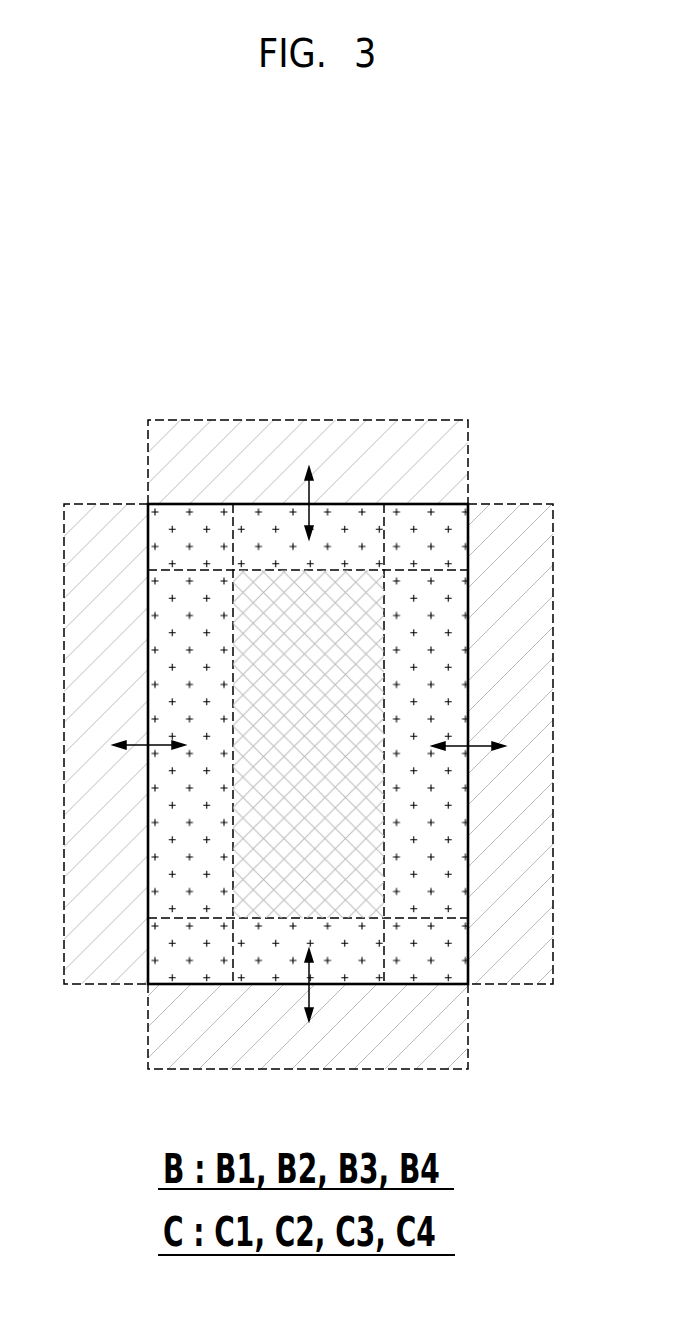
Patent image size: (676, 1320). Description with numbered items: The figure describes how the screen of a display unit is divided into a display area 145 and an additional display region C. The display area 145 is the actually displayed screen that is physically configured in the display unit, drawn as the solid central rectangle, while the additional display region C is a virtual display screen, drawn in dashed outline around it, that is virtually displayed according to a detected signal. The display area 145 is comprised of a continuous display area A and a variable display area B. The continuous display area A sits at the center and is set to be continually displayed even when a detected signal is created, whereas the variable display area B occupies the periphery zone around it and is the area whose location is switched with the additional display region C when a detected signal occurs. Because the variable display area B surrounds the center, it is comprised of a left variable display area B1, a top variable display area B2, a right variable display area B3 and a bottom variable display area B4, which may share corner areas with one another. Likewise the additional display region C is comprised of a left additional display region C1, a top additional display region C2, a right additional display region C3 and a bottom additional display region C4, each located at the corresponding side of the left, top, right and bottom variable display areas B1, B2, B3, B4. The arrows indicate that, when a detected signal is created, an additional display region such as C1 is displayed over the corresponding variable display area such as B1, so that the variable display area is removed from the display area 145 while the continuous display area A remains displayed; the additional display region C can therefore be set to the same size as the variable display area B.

The display area 145 is at (268, 781).
The continuous display area A is at (308, 744).
The variable display area B is at (308, 744).
The left variable display area B1 is at (190, 744).
The top variable display area B2 is at (308, 537).
The right variable display area B3 is at (426, 744).
The bottom variable display area B4 is at (308, 951).
The additional display region C is at (308, 744).
The left additional display region C1 is at (106, 744).
The top additional display region C2 is at (308, 462).
The right additional display region C3 is at (510, 744).
The bottom additional display region C4 is at (308, 1026).